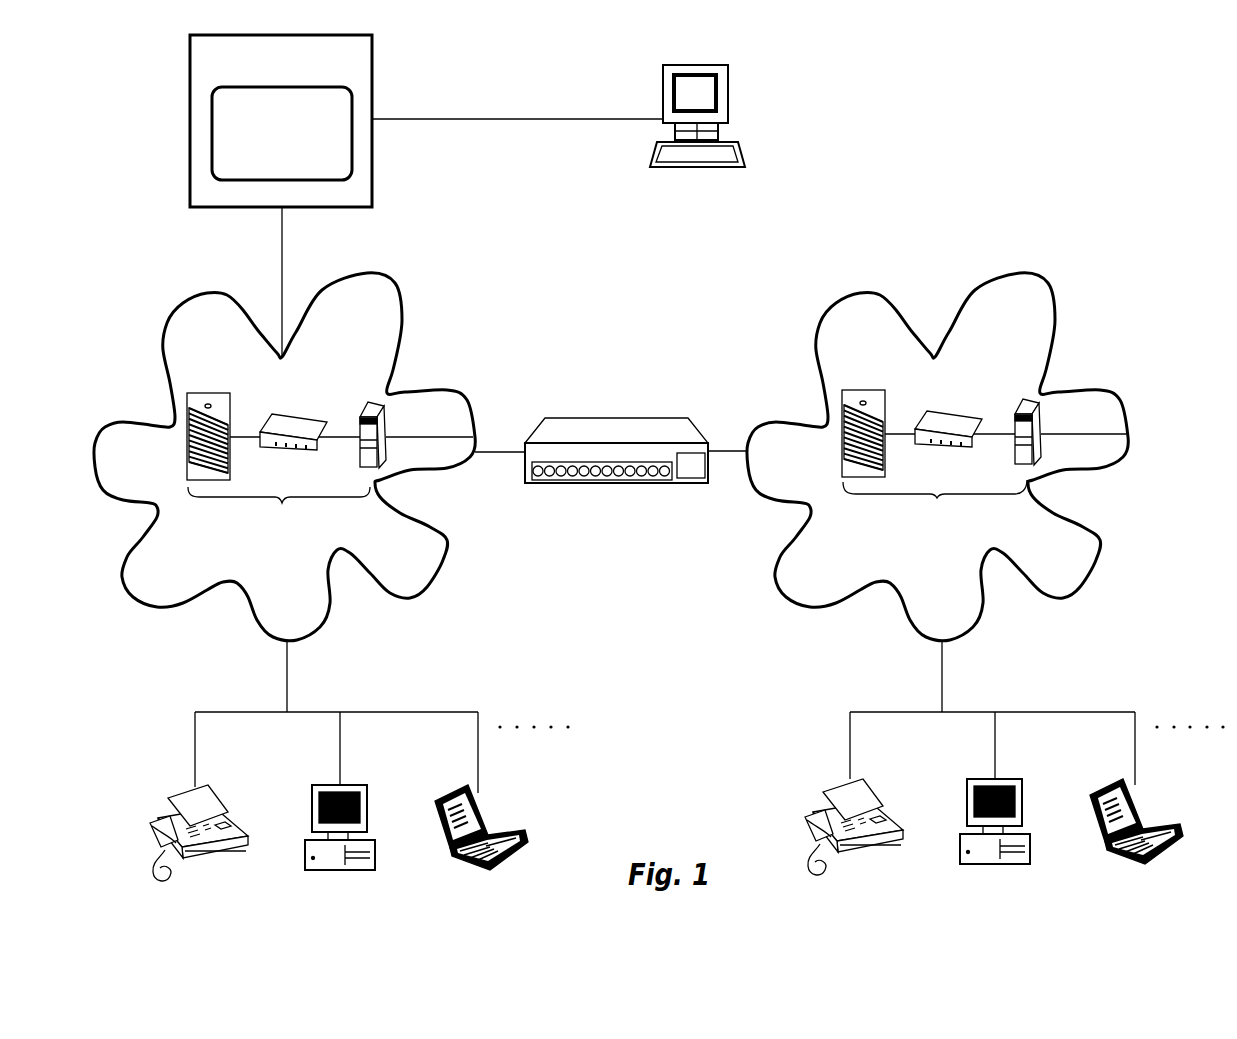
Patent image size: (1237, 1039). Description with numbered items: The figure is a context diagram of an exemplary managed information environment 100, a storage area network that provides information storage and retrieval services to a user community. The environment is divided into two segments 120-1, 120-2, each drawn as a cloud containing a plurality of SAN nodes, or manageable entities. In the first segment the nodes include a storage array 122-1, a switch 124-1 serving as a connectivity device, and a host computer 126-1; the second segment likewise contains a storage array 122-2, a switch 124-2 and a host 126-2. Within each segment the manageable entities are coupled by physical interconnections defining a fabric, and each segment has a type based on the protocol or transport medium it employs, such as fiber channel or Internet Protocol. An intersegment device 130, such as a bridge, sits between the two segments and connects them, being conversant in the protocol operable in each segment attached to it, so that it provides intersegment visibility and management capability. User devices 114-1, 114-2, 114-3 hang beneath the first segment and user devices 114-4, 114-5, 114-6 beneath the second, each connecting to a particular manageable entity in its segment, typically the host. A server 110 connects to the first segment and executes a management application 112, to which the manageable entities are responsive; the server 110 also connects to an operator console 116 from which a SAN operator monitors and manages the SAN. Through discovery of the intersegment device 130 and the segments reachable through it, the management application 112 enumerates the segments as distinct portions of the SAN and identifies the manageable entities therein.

The managed information environment 100 is at (928, 184).
The server 110 is at (373, 207).
The management application 112 is at (344, 87).
The operator console 116 is at (728, 80).
The segment 120-1 is at (400, 340).
The segment 120-2 is at (1058, 340).
The storage array 122-1 is at (178, 378).
The storage array 122-2 is at (838, 392).
The switch 124-1 is at (267, 418).
The switch 124-2 is at (947, 412).
The host 126-1 is at (385, 437).
The host 126-2 is at (1043, 432).
The intersegment device 130 is at (616, 483).
The user device 114-1 is at (197, 857).
The user device 114-2 is at (340, 870).
The user device 114-3 is at (508, 853).
The user device 114-4 is at (873, 852).
The user device 114-5 is at (997, 865).
The user device 114-6 is at (1135, 857).